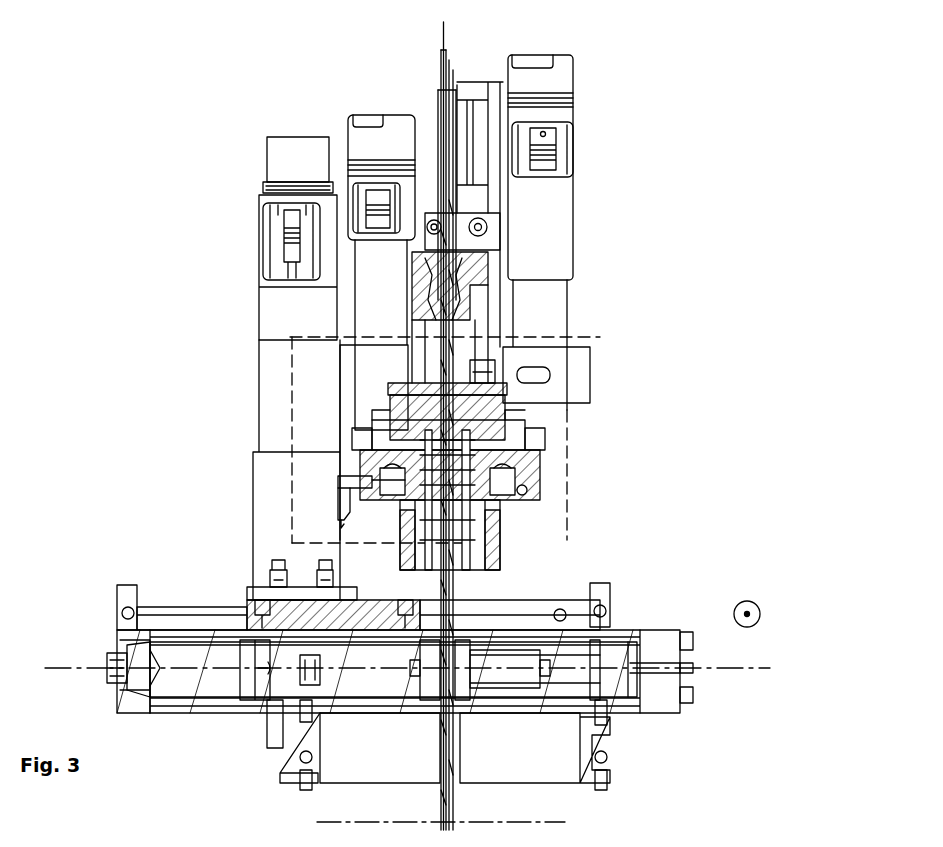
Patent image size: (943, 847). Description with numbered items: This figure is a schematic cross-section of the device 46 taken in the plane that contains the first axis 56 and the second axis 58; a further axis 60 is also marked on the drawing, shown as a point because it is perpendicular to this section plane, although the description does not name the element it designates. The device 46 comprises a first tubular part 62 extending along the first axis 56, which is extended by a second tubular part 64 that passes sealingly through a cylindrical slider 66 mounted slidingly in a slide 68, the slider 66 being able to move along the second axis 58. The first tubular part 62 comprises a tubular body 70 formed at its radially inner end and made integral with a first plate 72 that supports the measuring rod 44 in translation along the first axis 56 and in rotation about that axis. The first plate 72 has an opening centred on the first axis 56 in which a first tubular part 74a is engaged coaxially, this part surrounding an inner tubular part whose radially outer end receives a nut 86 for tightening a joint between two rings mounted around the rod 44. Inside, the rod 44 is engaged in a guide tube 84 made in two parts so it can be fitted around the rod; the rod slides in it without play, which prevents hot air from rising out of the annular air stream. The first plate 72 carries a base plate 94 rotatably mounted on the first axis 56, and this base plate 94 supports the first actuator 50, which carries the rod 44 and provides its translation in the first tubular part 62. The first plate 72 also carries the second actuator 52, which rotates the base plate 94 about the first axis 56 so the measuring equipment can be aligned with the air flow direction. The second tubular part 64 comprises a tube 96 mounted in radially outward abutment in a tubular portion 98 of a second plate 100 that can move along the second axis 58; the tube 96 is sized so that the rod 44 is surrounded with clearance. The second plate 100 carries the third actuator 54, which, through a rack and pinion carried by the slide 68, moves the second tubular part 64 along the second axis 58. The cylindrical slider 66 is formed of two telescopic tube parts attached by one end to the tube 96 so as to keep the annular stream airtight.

The measuring rod 44 is at (458, 816).
The device 46 is at (650, 60).
The first actuator 50 is at (577, 96).
The second actuator 52 is at (396, 110).
The third actuator 54 is at (297, 136).
The first axis 56 is at (443, 37).
The second axis 58 is at (752, 668).
The transverse axis 60 is at (749, 601).
The first tubular part 62 is at (500, 533).
The second tubular part 64 is at (482, 627).
The cylindrical slider 66 is at (643, 652).
The slide 68 is at (650, 622).
The tubular body 70 is at (567, 518).
The first plate 72 is at (500, 480).
The first tubular part 74a is at (400, 490).
The guide tube 84 is at (500, 512).
The nut 86 is at (470, 420).
The base plate 94 is at (495, 397).
The tube 96 is at (433, 677).
The tubular portion 98 is at (502, 551).
The second plate 100 is at (306, 615).